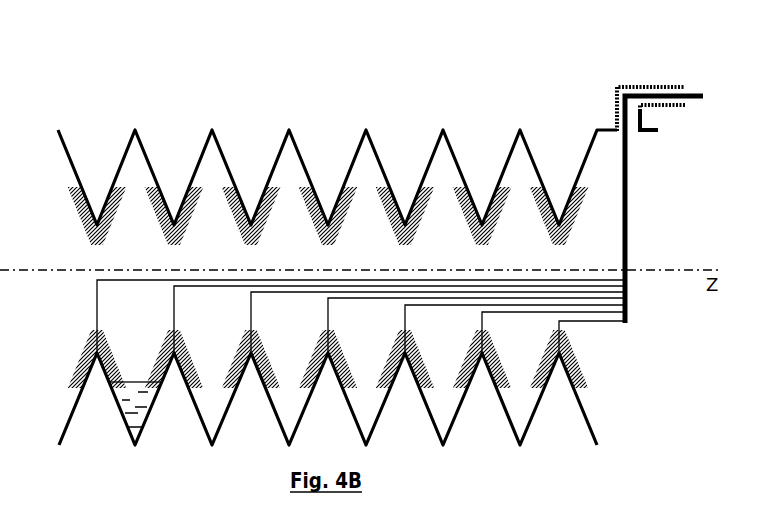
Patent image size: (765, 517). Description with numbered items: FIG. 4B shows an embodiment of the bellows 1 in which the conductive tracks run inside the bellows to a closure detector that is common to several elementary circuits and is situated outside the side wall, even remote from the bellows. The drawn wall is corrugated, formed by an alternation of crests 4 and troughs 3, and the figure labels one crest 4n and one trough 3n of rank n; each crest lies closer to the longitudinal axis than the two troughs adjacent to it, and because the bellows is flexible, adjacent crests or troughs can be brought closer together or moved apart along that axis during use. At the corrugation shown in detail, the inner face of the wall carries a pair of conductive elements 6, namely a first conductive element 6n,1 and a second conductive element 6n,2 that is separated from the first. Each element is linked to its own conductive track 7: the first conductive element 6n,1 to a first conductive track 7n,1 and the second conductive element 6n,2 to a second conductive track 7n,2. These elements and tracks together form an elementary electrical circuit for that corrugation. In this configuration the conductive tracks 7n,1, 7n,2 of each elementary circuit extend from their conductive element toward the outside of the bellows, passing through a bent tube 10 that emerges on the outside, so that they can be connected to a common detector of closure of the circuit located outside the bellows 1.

The bellows 1 is at (83, 53).
The bent tube 10 is at (606, 93).
The trough 3 is at (328, 422).
The trough of rank n 3n is at (130, 454).
The crest 4 is at (322, 358).
The crest of rank n 4n is at (86, 346).
The conductive element 6 is at (139, 400).
The first conductive element 6n,1 is at (168, 377).
The second conductive element 6n,2 is at (103, 387).
The conductive track 7 is at (402, 313).
The first conductive track 7n,1 is at (633, 274).
The second conductive track 7n,2 is at (556, 323).